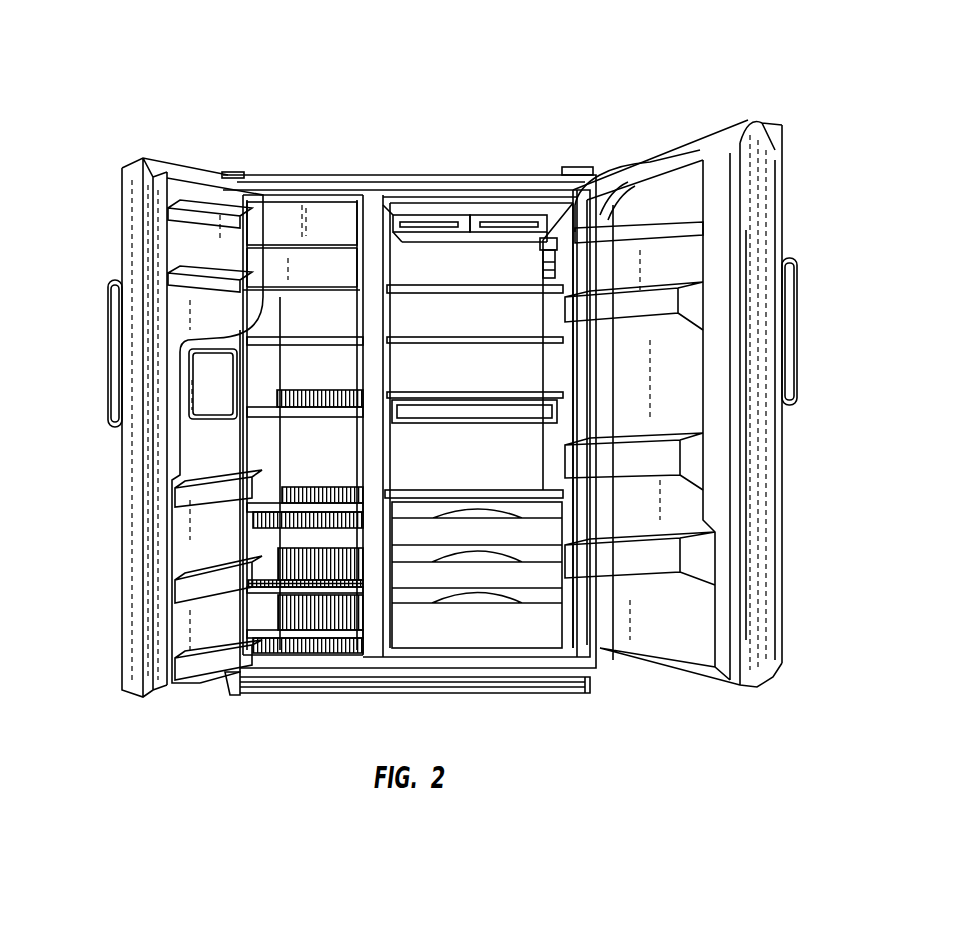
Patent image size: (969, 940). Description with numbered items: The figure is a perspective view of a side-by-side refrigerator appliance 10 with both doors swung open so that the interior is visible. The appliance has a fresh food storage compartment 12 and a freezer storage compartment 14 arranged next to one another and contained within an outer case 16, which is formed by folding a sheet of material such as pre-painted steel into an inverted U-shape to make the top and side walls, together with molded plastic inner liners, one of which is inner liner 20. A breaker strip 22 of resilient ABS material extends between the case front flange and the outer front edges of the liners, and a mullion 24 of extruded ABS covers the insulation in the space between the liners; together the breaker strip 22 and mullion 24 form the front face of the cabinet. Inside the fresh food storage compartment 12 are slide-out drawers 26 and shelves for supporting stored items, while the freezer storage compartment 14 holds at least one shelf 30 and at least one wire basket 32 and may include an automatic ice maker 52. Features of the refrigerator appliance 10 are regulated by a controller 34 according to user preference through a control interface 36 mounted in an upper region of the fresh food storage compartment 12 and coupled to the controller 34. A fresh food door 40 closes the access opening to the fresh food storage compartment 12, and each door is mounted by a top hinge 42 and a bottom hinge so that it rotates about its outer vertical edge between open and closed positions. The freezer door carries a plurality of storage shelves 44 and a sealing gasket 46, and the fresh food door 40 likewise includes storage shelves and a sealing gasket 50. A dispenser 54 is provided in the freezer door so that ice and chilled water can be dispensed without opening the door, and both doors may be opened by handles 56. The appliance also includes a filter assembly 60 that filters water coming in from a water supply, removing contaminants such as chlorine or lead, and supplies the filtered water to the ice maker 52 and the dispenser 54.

The refrigerator appliance 10 is at (578, 62).
The fresh food storage compartment 12 is at (450, 198).
The freezer storage compartment 14 is at (331, 207).
The outer case 16 is at (400, 175).
The inner liner 20 is at (287, 642).
The breaker strip 22 is at (543, 175).
The mullion 24 is at (372, 474).
The slide-out drawers 26 is at (542, 532).
The shelf 30 is at (345, 337).
The wire basket 32 is at (312, 413).
The controller 34 is at (477, 225).
The control interface 36 is at (112, 212).
The fresh food door 40 is at (800, 152).
The top hinge 42 is at (224, 173).
The storage shelves 44 is at (183, 498).
The sealing gasket 46 is at (153, 625).
The sealing gasket 50 is at (747, 247).
The automatic ice maker 52 is at (310, 282).
The dispenser 54 is at (187, 398).
The handles 56 is at (108, 333).
The filter assembly 60 is at (557, 285).